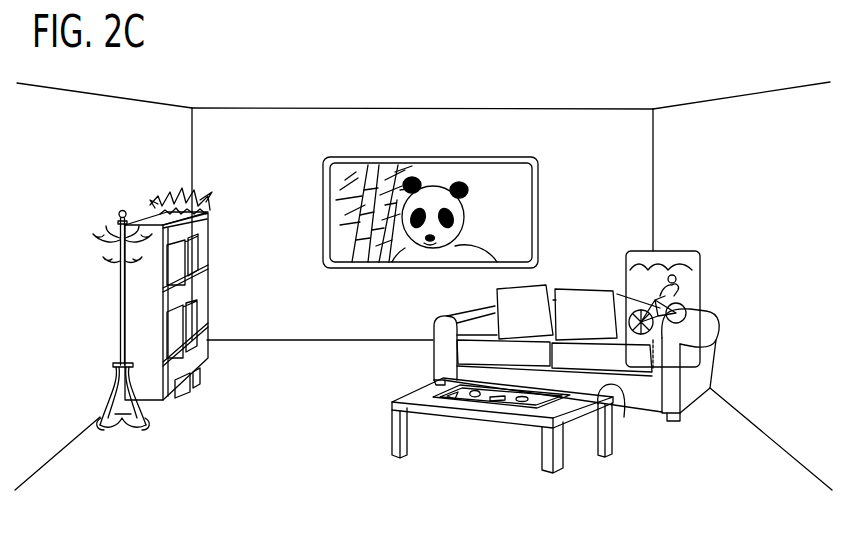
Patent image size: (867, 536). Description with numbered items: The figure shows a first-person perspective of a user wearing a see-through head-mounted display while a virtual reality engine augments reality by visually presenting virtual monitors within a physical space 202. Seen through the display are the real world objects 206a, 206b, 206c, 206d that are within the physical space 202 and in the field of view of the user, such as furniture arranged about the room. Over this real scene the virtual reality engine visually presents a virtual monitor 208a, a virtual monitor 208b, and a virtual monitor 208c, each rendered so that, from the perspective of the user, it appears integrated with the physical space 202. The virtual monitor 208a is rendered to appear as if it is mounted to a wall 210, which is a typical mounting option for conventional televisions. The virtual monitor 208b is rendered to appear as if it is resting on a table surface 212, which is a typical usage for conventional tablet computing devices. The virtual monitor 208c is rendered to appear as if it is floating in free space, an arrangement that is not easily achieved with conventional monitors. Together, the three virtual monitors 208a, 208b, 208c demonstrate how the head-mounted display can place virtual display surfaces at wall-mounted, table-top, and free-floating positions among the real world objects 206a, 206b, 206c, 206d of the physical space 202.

The physical space 202 is at (103, 134).
The real world object 206a is at (119, 333).
The real world object 206b is at (212, 290).
The real world object 206c is at (444, 373).
The real world object 206d is at (392, 428).
The virtual monitor 208a is at (323, 224).
The virtual monitor 208b is at (450, 393).
The virtual monitor 208c is at (625, 273).
The wall 210 is at (638, 139).
The table surface 212 is at (613, 388).